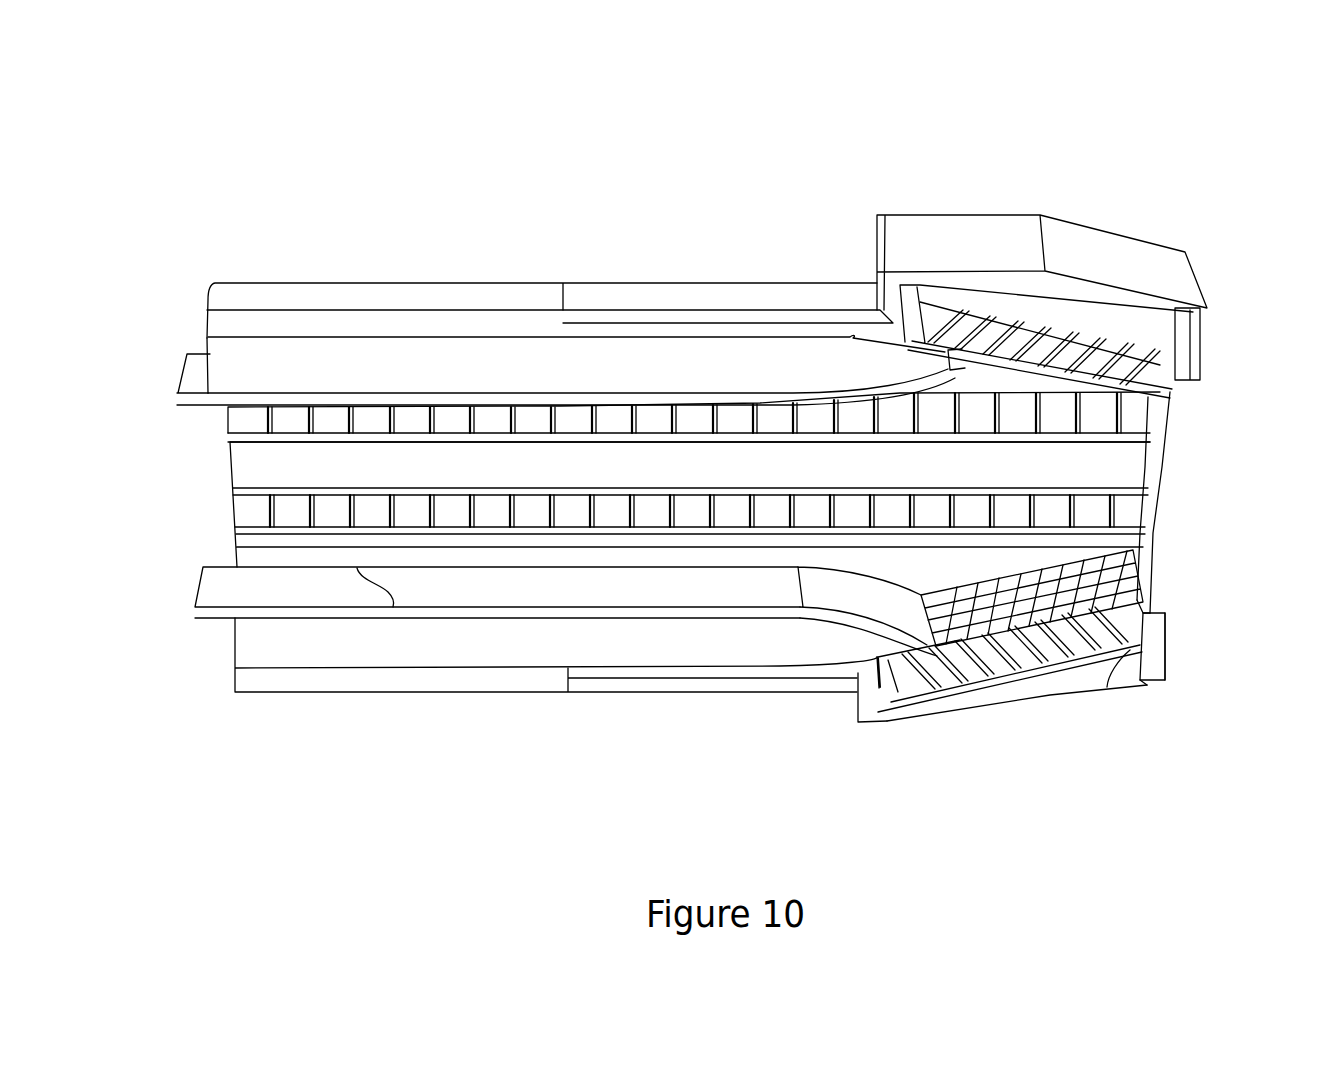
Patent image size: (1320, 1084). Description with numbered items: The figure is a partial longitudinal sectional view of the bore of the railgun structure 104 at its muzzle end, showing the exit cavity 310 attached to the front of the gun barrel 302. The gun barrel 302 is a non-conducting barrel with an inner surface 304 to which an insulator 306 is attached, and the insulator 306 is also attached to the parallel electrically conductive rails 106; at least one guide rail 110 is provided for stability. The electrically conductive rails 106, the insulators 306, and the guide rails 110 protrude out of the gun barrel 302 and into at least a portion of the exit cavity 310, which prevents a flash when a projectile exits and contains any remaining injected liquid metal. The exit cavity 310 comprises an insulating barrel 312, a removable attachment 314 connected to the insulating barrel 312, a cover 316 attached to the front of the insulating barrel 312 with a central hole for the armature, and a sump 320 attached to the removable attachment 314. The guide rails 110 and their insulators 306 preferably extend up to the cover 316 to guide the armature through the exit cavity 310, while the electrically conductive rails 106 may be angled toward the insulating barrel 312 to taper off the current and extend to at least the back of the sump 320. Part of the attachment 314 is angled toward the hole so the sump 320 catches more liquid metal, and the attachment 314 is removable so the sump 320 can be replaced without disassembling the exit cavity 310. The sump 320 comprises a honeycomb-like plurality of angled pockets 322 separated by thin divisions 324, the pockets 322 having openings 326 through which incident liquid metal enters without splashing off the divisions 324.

The railgun structure 104 is at (170, 77).
The electrically conductive rails 106 is at (186, 365).
The guide rail 110 is at (228, 410).
The gun barrel 302 is at (470, 284).
The inner surface 304 is at (320, 338).
The insulator 306 is at (358, 338).
The exit cavity 310 is at (1210, 188).
The insulating barrel 312 is at (705, 284).
The removable attachment 314 is at (938, 215).
The cover 316 is at (1167, 642).
The sump 320 is at (1196, 336).
The pockets 322 is at (1006, 334).
The divisions 324 is at (1068, 350).
The openings 326 is at (952, 370).